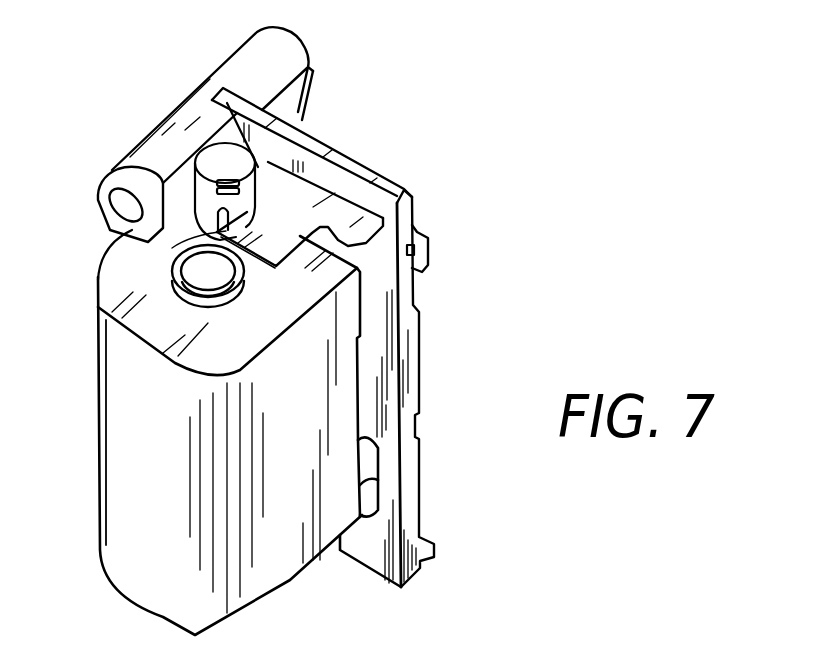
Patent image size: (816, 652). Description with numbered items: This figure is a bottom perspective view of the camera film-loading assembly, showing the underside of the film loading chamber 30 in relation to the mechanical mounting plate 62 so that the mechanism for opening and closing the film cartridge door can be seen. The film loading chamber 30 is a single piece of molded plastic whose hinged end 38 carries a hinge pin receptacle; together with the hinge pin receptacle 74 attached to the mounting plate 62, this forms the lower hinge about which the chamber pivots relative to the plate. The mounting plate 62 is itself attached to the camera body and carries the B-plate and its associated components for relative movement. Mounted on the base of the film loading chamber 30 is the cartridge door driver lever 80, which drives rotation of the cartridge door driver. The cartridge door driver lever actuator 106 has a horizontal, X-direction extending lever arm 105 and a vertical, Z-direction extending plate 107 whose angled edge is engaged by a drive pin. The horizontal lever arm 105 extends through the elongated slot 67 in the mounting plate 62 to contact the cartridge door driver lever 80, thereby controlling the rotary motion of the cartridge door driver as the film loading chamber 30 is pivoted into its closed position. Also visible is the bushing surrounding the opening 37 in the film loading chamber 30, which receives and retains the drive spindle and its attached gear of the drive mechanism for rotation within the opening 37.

The film loading chamber 30 is at (128, 433).
The opening 37 is at (191, 303).
The hinged end 38 is at (98, 207).
The mounting plate 62 is at (420, 367).
The elongated slot 67 is at (307, 134).
The hinge pin receptacle 74 is at (301, 44).
The cartridge door driver lever 80 is at (215, 293).
The horizontal lever arm 105 is at (417, 178).
The cartridge door driver lever actuator 106 is at (418, 228).
The vertically extending plate 107 is at (421, 259).